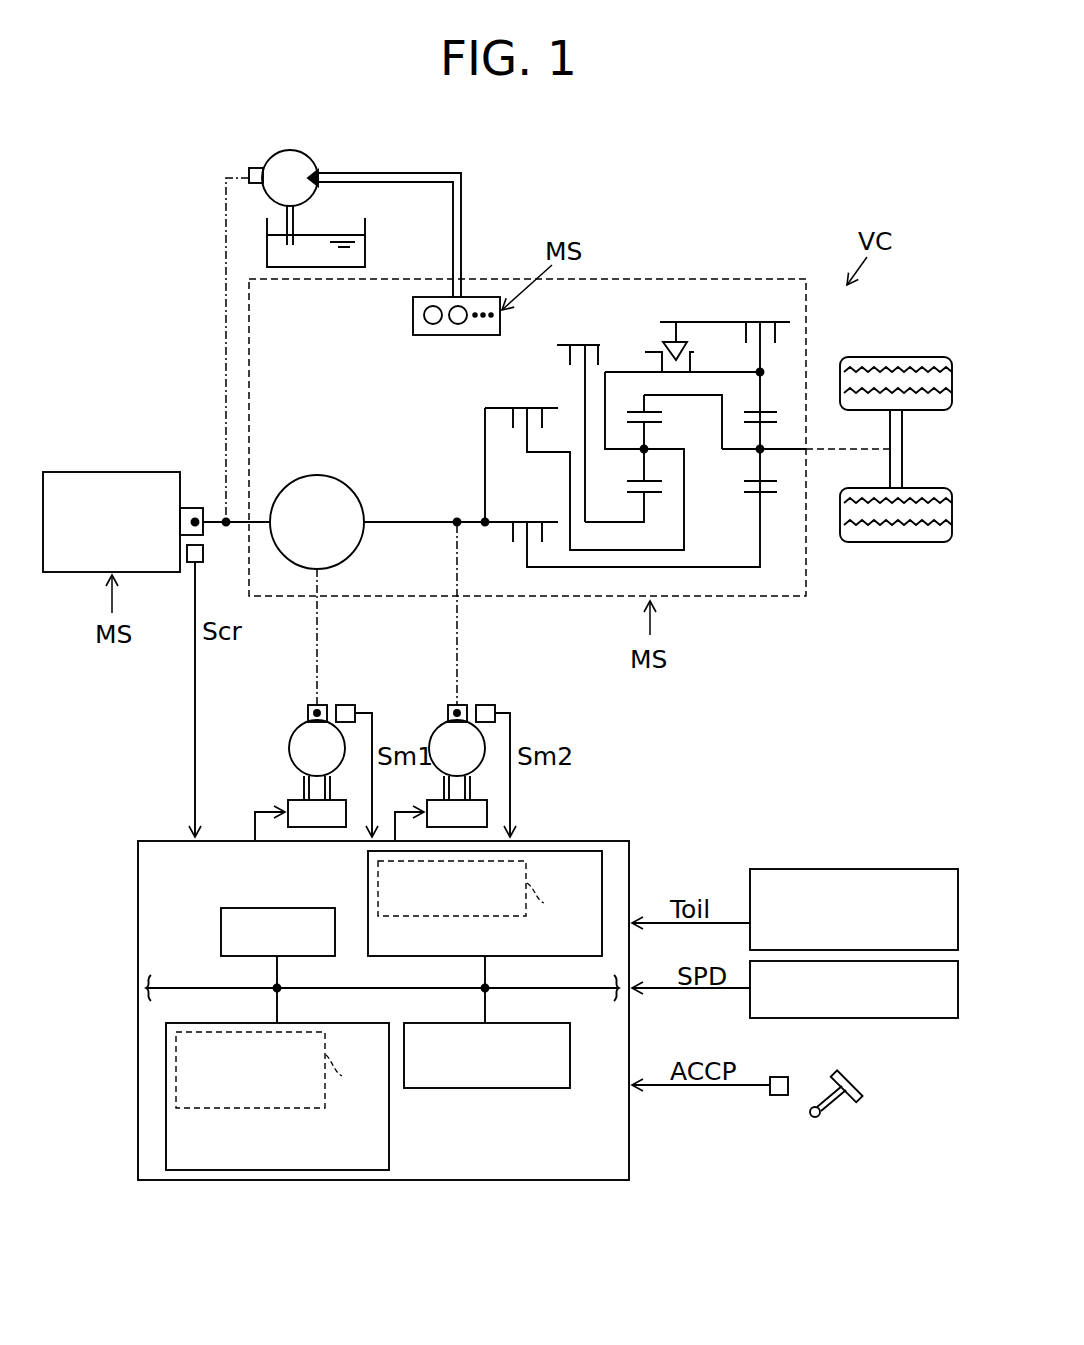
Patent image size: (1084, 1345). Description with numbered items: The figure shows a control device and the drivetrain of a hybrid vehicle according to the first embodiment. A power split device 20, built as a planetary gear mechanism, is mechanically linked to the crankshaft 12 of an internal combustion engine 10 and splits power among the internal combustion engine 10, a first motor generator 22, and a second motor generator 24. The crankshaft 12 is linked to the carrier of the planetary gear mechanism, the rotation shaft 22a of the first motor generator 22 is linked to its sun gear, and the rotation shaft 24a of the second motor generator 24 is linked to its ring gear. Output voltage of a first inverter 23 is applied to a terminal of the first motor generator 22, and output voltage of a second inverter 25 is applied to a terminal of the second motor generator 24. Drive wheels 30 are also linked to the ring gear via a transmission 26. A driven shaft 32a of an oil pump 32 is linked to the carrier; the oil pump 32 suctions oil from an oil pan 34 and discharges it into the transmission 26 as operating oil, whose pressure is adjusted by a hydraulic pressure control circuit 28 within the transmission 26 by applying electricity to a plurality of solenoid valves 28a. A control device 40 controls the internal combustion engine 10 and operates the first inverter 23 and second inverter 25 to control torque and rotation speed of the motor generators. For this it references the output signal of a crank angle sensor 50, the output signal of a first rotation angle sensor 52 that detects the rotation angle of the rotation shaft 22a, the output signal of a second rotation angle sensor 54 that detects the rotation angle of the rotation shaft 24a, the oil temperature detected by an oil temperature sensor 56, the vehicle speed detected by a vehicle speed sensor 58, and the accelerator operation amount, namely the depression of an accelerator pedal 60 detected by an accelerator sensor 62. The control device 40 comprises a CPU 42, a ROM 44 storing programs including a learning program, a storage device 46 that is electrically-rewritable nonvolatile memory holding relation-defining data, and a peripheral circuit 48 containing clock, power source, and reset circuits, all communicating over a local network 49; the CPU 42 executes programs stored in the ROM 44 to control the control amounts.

The internal combustion engine 10 is at (112, 472).
The crankshaft 12 is at (193, 508).
The power split device 20 is at (362, 488).
The first motor generator 22 is at (287, 736).
The rotation shaft 22a is at (308, 713).
The first inverter 23 is at (346, 812).
The second motor generator 24 is at (440, 712).
The rotation shaft 24a is at (450, 705).
The second inverter 25 is at (487, 812).
The transmission 26 is at (754, 262).
The hydraulic pressure control circuit 28 is at (459, 314).
The solenoid valves 28a is at (433, 324).
The drive wheels 30 is at (895, 357).
The oil pump 32 is at (300, 150).
The driven shaft 32a is at (256, 168).
The oil pan 34 is at (365, 258).
The control device 40 is at (595, 841).
The central processing unit (CPU) 42 is at (303, 908).
The read-only memory (ROM) 44 is at (602, 876).
The storage device 46 is at (330, 1018).
The peripheral circuit 48 is at (510, 1018).
The local network 49 is at (530, 977).
The crank angle sensor 50 is at (192, 562).
The first rotation angle sensor 52 is at (345, 705).
The second rotation angle sensor 54 is at (485, 705).
The oil temperature sensor 56 is at (883, 869).
The vehicle speed sensor 58 is at (878, 1018).
The accelerator pedal 60 is at (856, 1078).
The accelerator sensor 62 is at (782, 1077).